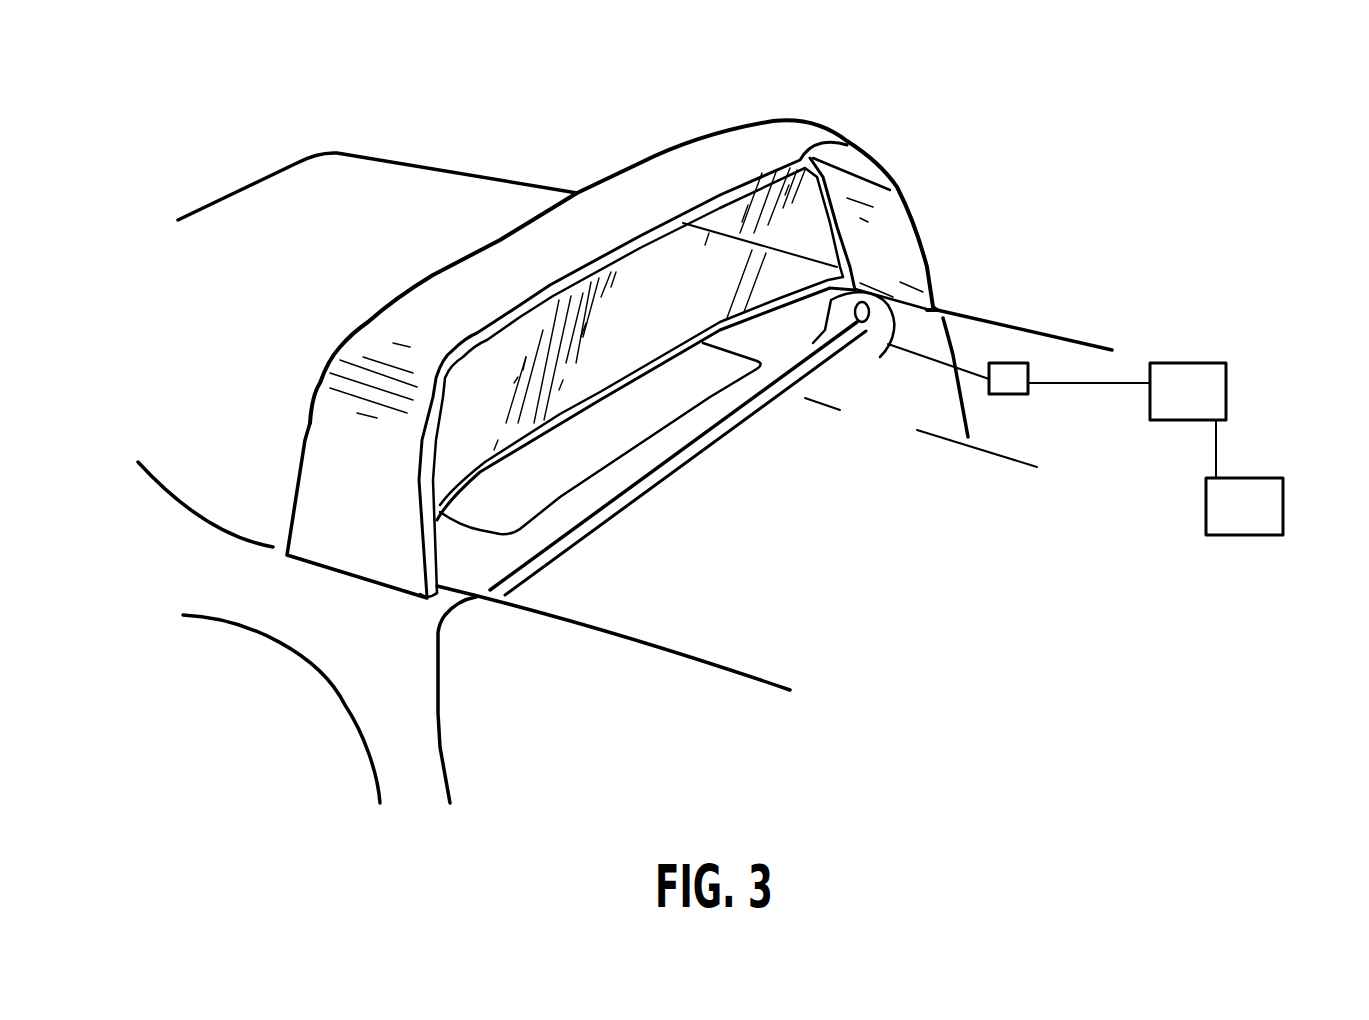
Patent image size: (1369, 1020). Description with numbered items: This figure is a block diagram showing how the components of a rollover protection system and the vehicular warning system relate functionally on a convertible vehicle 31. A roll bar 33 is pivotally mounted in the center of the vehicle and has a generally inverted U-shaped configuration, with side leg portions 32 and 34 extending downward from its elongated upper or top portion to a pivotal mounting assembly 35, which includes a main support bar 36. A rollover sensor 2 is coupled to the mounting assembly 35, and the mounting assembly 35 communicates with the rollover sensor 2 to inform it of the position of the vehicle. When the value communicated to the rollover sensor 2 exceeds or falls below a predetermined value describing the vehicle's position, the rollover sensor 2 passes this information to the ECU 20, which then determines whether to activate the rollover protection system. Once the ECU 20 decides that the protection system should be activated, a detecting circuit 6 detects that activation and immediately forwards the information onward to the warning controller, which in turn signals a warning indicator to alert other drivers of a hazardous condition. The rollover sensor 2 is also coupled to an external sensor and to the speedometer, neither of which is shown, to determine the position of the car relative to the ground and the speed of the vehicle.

The roll bar 33 is at (672, 155).
The side leg portion 34 is at (328, 468).
The side leg portion 32 is at (887, 237).
The pivotal mounting assembly 35 is at (860, 337).
The main support bar 36 is at (677, 465).
The rollover sensor 2 is at (1012, 365).
The ECU 20 is at (1195, 367).
The detecting circuit 6 is at (1247, 520).
The convertible vehicle 31 is at (1278, 378).